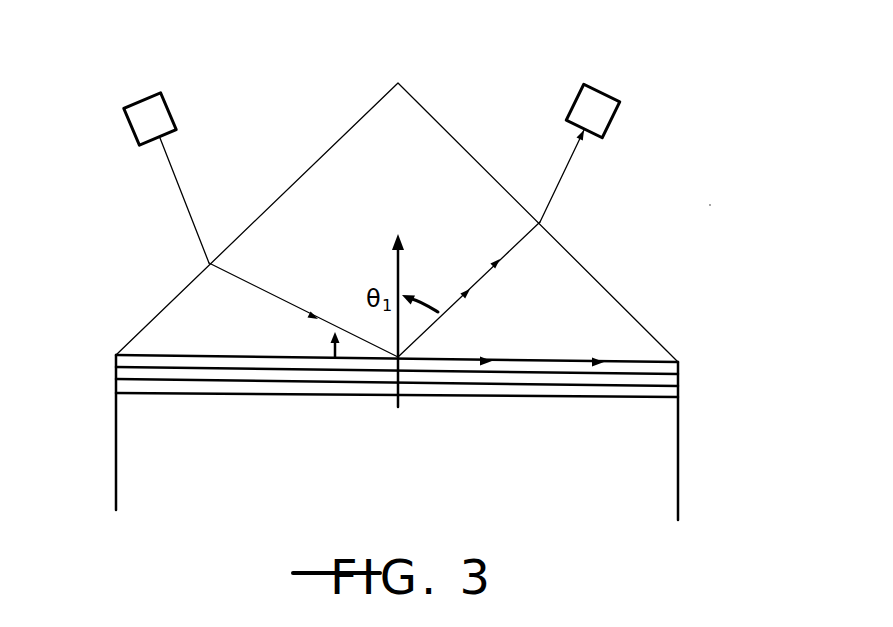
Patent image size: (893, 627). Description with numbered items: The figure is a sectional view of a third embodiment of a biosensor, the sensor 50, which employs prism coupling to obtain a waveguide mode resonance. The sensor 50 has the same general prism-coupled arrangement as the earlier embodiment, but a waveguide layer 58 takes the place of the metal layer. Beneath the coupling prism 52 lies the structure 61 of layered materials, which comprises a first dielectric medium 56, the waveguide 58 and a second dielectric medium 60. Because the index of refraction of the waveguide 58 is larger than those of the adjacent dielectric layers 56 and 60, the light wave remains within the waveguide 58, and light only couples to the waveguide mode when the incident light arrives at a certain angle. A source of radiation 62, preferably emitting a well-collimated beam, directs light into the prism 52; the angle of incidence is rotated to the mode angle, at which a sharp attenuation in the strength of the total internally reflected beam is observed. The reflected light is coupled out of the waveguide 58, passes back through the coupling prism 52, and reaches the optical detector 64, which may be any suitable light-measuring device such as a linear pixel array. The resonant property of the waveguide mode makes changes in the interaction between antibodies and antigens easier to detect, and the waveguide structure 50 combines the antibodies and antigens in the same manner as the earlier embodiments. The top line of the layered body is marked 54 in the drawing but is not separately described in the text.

The sensor 50 is at (712, 200).
The coupling prism 52 is at (440, 122).
The first layer (top surface) 54 is at (150, 340).
The first dielectric medium 56 is at (680, 367).
The waveguide layer 58 is at (681, 379).
The second dielectric medium 60 is at (623, 401).
The structure of the layered materials 61 is at (96, 385).
The source of radiation 62 is at (123, 129).
The optical detector 64 is at (620, 96).